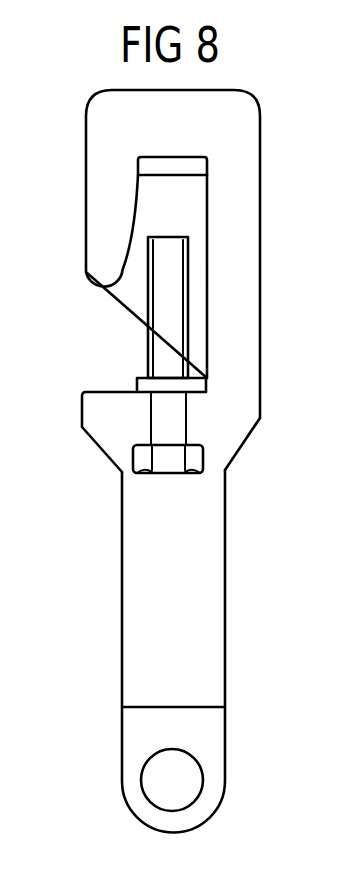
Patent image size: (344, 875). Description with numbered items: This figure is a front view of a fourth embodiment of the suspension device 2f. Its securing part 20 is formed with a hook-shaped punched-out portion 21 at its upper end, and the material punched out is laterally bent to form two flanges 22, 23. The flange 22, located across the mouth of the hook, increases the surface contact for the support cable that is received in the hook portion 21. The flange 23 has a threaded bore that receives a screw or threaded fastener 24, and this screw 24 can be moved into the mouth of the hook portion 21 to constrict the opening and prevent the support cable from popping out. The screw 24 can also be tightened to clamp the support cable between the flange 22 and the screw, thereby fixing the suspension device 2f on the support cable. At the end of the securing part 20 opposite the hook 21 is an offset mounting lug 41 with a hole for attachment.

The suspension device 2f is at (170, 461).
The securing part 20 is at (200, 512).
The hook-shaped punched-out portion 21 is at (105, 210).
The flange 22 is at (167, 166).
The flange 23 is at (140, 383).
The screw 24 is at (167, 345).
The offset mounting lug 41 is at (207, 752).